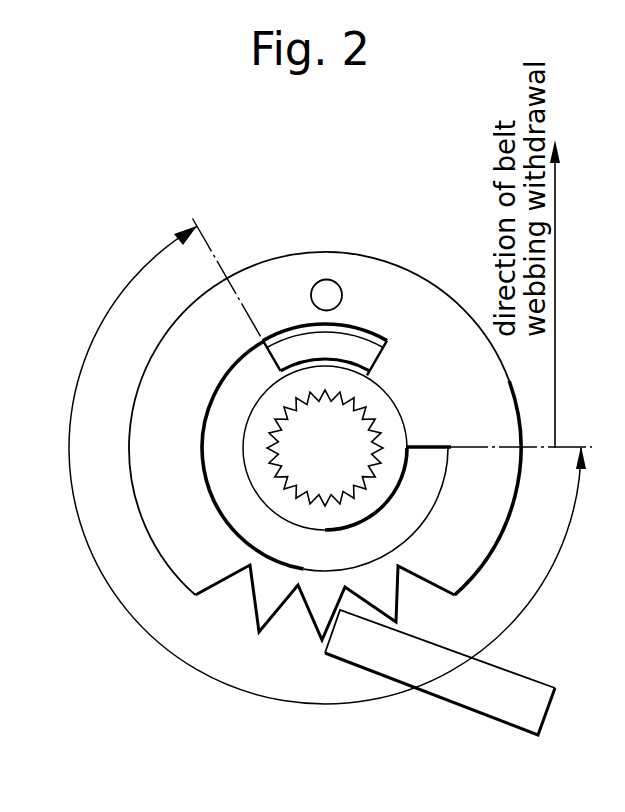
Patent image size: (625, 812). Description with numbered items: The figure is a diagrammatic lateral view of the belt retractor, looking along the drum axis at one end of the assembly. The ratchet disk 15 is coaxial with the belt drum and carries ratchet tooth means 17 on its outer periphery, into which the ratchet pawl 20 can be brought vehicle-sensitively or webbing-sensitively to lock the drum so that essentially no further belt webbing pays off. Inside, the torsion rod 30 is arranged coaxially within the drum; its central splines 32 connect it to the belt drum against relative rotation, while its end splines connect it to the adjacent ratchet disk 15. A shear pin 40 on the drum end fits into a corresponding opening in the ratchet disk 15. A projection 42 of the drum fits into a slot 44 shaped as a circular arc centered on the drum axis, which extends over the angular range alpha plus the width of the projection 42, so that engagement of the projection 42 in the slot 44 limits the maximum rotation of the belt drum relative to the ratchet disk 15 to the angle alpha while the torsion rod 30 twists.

The ratchet disk 15 is at (148, 400).
The ratchet tooth means 17 is at (315, 612).
The ratchet pawl 20 is at (513, 703).
The torsion rod 30 is at (353, 460).
The splines 32 is at (280, 478).
The shear pin 40 is at (322, 292).
The projection 42 is at (357, 348).
The slot 44 is at (432, 465).